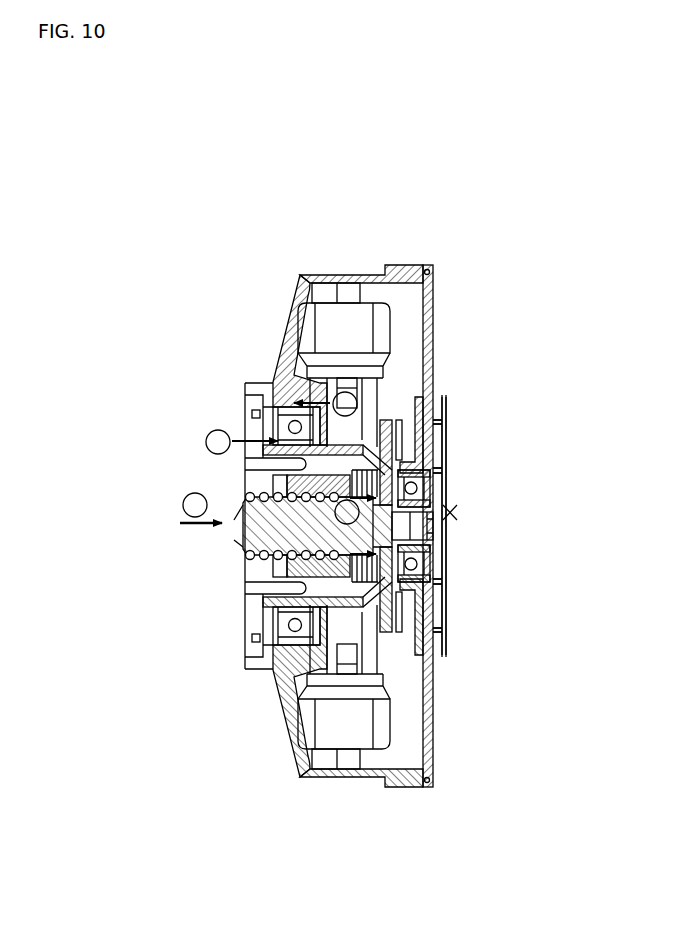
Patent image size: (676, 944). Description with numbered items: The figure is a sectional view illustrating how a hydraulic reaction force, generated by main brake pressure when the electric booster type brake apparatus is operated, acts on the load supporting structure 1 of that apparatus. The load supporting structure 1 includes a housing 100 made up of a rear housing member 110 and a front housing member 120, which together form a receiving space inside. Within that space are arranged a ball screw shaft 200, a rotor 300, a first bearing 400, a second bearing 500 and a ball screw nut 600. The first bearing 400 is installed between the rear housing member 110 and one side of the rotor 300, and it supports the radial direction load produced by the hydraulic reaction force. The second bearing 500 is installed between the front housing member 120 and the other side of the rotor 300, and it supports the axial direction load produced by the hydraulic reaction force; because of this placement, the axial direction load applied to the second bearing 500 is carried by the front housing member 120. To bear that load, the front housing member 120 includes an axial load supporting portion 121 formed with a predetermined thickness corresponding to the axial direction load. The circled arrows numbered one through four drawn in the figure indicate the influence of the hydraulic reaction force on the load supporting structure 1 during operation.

The load supporting structure 1 is at (214, 785).
The housing 100 is at (463, 170).
The rear housing member 110 is at (442, 277).
The front housing member 120 is at (365, 277).
The axial load supporting portion 121 is at (270, 376).
The ball screw shaft 200 is at (241, 527).
The rotor 300 is at (448, 510).
The first bearing 400 is at (414, 484).
The second bearing 500 is at (296, 408).
The ball screw nut 600 is at (277, 560).